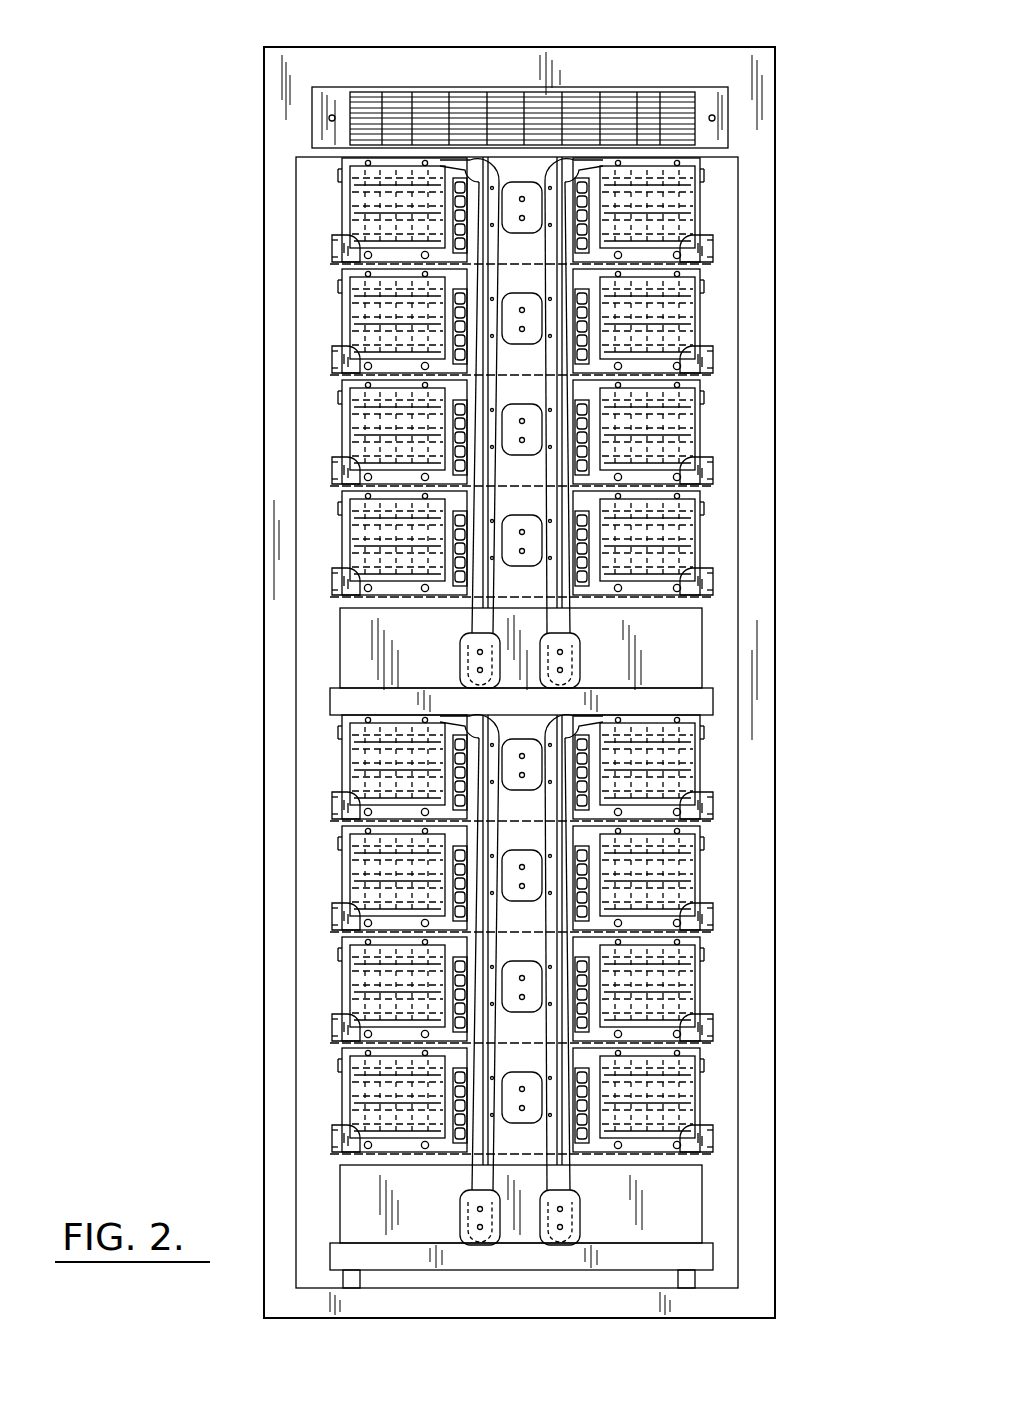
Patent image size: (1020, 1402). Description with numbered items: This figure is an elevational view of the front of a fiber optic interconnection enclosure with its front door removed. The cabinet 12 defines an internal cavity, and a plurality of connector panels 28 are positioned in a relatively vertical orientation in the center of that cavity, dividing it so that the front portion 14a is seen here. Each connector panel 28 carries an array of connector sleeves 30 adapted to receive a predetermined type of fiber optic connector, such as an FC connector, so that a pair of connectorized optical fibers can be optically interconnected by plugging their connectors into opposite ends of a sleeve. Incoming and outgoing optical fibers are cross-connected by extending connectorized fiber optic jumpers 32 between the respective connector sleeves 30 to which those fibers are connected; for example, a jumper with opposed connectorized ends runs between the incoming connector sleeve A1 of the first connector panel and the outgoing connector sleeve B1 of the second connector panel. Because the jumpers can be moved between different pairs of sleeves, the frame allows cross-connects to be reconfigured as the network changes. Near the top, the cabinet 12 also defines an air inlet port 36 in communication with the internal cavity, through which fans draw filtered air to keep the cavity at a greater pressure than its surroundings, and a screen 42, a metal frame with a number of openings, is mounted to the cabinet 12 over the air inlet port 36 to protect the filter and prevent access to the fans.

The cabinet 12 is at (757, 332).
The front portion 14a is at (712, 432).
The air inlet port 36 is at (628, 117).
The screen 42 is at (580, 103).
The connector sleeve A of connector panel 1 A1 is at (465, 172).
The connector sleeve B of connector panel 2 B1 is at (703, 210).
The connector panel 28 is at (693, 836).
The connector sleeve 30 is at (367, 762).
The fiber optic jumper 32 is at (490, 890).